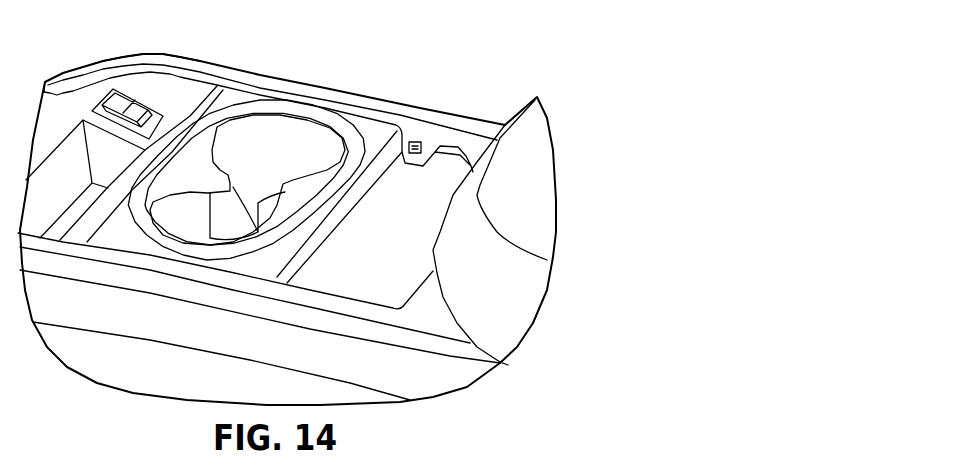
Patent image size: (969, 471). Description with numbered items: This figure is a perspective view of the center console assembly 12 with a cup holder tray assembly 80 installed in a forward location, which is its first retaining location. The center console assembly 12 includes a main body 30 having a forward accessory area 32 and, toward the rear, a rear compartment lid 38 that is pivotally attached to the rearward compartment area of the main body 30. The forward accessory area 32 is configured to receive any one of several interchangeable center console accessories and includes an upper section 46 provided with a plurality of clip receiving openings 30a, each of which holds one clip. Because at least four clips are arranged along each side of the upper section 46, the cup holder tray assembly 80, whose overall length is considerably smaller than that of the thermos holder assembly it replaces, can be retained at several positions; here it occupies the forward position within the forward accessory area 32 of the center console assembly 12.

The center console assembly 12 is at (252, 55).
The main body 30 is at (325, 94).
The clip receiving openings 30a is at (414, 153).
The forward accessory area 32 is at (459, 106).
The rear compartment lid 38 is at (527, 192).
The upper section 46 is at (173, 67).
The cup holder tray assembly 80 is at (333, 187).